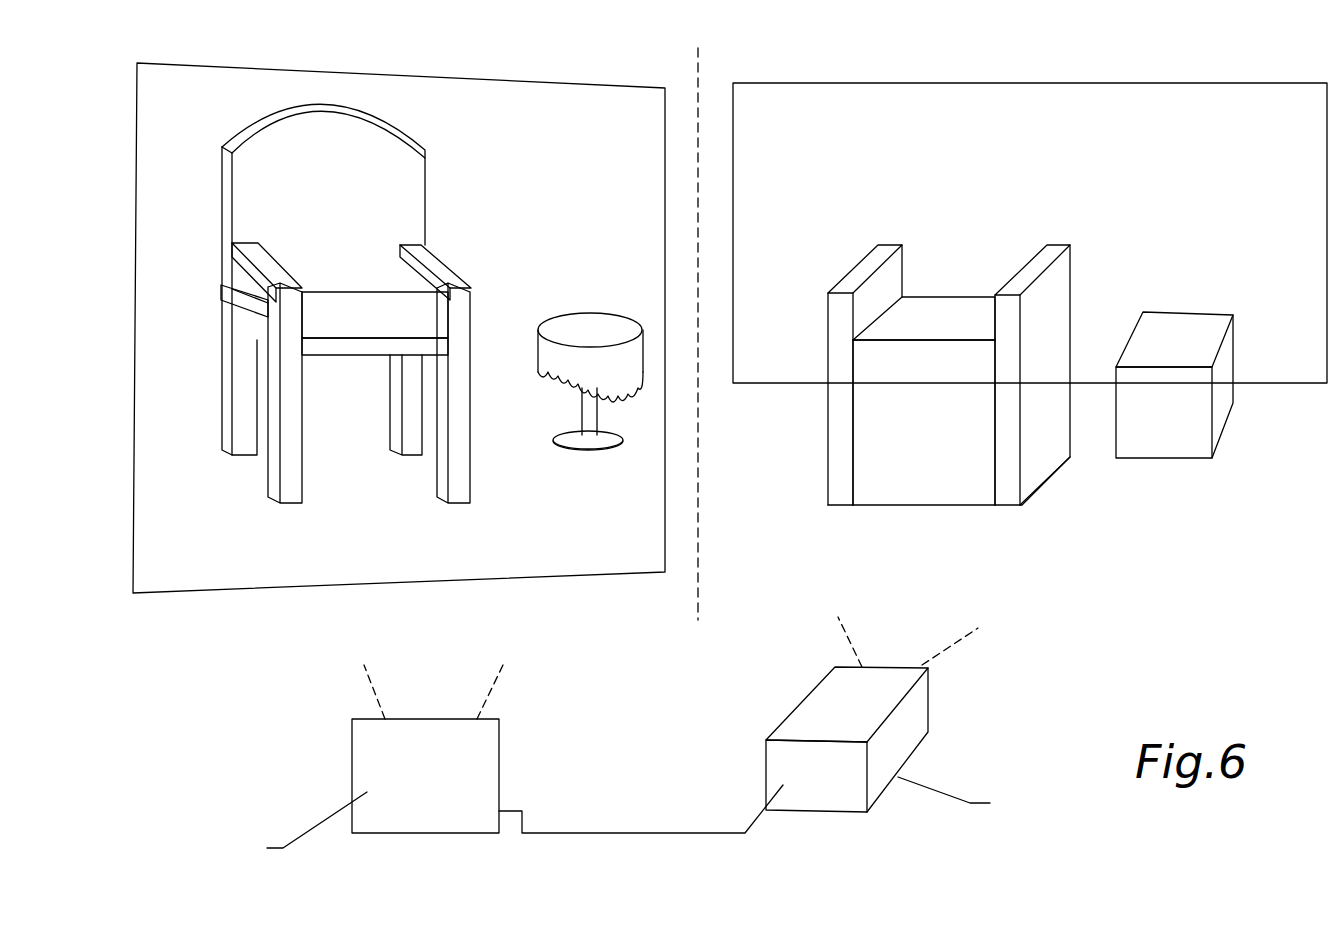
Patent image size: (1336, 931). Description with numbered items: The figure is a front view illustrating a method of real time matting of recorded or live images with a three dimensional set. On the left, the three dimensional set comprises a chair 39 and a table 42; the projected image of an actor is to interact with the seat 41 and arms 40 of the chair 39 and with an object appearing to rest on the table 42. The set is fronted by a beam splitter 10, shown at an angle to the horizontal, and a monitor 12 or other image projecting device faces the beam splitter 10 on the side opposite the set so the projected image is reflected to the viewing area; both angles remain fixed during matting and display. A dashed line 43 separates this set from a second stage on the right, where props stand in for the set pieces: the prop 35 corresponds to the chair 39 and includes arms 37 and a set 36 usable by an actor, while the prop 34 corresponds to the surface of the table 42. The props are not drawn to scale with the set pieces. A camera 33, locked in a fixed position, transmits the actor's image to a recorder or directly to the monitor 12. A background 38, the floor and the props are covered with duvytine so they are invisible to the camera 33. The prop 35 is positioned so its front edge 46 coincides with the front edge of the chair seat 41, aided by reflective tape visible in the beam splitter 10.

The beam splitter 10 is at (563, 87).
The monitor 12 is at (455, 820).
The camera 33 is at (918, 720).
The prop 34 is at (1210, 320).
The prop 35 is at (980, 495).
The set 36 is at (952, 312).
The arms 37 is at (875, 258).
The background 38 is at (1072, 83).
The chair 39 is at (440, 170).
The arms 40 is at (253, 253).
The seat 41 is at (348, 328).
The table 42 is at (590, 320).
The dividing line 43 is at (698, 75).
The front edge 46 is at (926, 340).